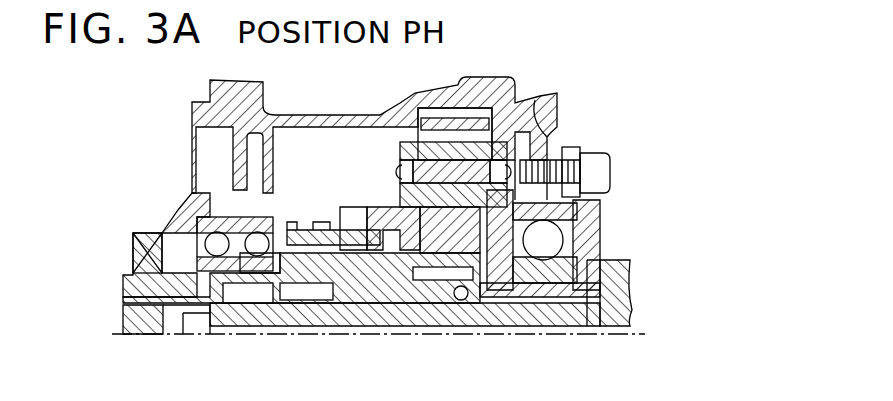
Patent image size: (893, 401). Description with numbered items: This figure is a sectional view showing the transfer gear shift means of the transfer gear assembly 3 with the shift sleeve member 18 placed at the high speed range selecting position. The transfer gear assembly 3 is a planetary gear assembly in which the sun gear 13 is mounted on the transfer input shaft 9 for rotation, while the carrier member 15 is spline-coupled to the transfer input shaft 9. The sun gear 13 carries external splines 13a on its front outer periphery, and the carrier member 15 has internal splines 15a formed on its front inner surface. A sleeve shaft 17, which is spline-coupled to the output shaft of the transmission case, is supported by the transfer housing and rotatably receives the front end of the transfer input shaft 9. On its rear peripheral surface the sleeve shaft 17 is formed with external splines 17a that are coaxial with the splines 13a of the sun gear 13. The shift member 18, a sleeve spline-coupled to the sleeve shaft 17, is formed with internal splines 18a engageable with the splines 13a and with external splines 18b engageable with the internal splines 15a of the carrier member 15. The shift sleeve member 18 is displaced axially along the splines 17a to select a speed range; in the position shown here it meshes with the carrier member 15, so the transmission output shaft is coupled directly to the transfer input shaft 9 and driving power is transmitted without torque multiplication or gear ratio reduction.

The transfer gear assembly 3 is at (372, 157).
The transfer input shaft 9 is at (245, 340).
The sun gear 13 is at (447, 333).
The external splines 13a is at (400, 322).
The carrier member 15 is at (378, 185).
The internal splines 15a is at (397, 225).
The sleeve shaft 17 is at (130, 287).
The external splines 17a is at (340, 322).
The shift member 18 is at (320, 226).
The internal splines 18a is at (307, 330).
The external splines 18b is at (358, 210).